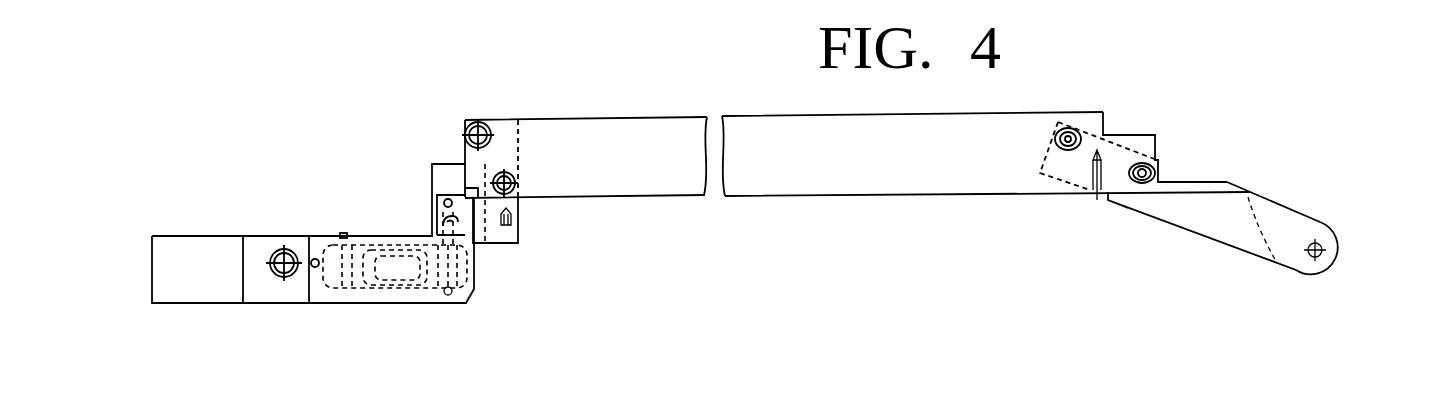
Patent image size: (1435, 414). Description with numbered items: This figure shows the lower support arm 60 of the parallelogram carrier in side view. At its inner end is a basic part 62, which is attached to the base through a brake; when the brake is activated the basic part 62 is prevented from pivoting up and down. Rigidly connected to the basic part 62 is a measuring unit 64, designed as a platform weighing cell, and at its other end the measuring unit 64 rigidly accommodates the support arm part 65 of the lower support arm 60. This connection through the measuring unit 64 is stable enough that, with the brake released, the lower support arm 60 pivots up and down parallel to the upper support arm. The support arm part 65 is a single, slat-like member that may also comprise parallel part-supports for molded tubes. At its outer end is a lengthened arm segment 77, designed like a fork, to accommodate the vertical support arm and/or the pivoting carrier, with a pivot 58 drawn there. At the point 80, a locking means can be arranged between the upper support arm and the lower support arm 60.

The pivot pin 58 is at (1307, 253).
The lower support arm 60 is at (658, 252).
The basic part 62 is at (275, 294).
The measuring unit 64 is at (432, 292).
The support arm part 65 is at (793, 186).
The lengthened arm segment 77 is at (1320, 227).
The point 80 is at (1067, 205).